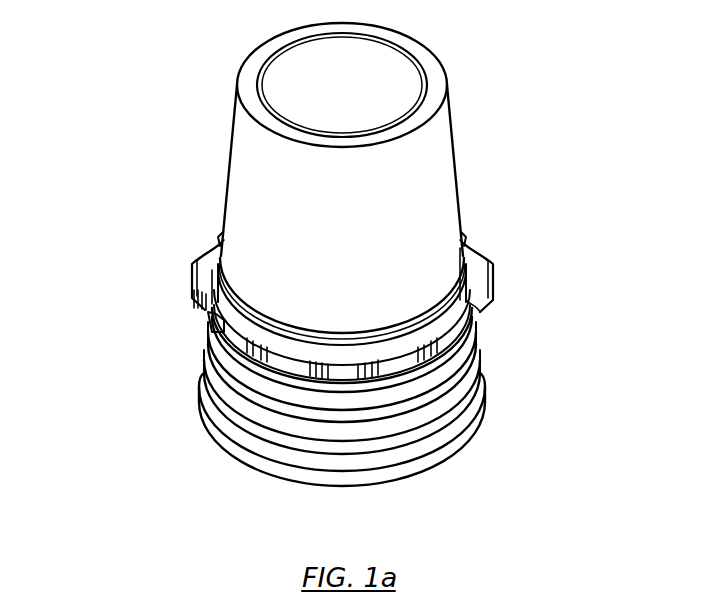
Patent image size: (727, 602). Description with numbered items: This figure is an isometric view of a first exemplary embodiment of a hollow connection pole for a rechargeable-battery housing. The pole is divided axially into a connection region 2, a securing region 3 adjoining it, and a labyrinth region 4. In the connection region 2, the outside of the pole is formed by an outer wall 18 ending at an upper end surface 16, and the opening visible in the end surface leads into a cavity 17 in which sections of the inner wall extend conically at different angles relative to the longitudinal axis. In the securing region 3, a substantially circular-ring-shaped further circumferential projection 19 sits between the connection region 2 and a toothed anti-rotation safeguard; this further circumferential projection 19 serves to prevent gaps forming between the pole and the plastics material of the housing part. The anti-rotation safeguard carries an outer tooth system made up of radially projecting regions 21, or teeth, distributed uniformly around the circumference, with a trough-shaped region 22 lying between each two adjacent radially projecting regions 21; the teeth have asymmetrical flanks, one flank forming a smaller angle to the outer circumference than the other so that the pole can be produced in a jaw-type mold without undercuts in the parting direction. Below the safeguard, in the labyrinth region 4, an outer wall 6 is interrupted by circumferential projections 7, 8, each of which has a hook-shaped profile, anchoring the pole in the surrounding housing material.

The connection region 2 is at (320, 132).
The securing region 3 is at (337, 354).
The labyrinth region 4 is at (341, 404).
The outer wall 6 is at (268, 418).
The circumferential projection 7 is at (278, 395).
The circumferential projection 8 is at (268, 455).
The upper end surface 16 is at (245, 88).
The cavity 17 is at (300, 70).
The outer wall 18 is at (232, 145).
The further circumferential projection 19 is at (213, 285).
The radially projecting region 21 is at (242, 348).
The trough-shaped region 22 is at (216, 317).